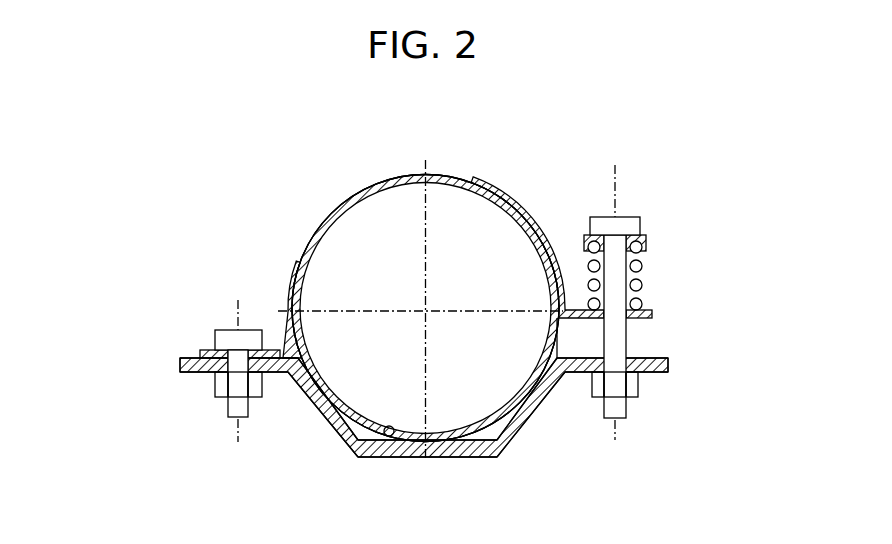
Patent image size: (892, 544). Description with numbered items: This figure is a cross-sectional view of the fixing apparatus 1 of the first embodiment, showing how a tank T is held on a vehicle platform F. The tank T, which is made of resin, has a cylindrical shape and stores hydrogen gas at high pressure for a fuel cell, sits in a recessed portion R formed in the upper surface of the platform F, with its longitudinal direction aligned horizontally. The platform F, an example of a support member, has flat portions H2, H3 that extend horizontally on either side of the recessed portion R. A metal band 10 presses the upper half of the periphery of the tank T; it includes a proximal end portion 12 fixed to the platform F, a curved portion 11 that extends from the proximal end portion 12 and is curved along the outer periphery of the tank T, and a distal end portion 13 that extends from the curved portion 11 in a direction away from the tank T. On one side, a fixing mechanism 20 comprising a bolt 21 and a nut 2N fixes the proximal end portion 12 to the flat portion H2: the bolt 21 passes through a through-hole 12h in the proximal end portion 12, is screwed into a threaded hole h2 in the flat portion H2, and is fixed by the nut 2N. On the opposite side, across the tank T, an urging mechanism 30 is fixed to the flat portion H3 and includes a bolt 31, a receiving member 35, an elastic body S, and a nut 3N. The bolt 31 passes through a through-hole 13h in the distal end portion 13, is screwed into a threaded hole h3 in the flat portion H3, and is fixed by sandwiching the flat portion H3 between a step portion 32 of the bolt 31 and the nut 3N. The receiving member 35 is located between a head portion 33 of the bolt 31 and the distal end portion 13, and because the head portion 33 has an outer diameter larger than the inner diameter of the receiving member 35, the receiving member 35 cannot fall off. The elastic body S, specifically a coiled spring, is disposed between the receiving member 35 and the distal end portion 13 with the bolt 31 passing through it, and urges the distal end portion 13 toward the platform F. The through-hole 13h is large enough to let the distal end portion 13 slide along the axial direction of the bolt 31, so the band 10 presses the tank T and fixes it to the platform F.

The fixing apparatus 1 is at (550, 136).
The band 10 is at (447, 177).
The curved portion 11 is at (387, 178).
The proximal end portion 12 is at (285, 343).
The through-hole 12h is at (224, 345).
The distal end portion 13 is at (652, 314).
The through-hole 13h is at (603, 314).
The fixing mechanism 20 is at (211, 337).
The bolt 21 is at (215, 340).
The nut 2N is at (213, 392).
The threaded hole h2 is at (250, 378).
The flat portion H2 is at (284, 376).
The urging mechanism 30 is at (627, 299).
The bolt 31 is at (627, 332).
The step portion 32 is at (640, 357).
The head portion 33 is at (627, 216).
The receiving member 35 is at (648, 242).
The elastic body S is at (642, 262).
The nut 3N is at (638, 388).
The threaded hole h3 is at (600, 400).
The flat portion H3 is at (567, 382).
The recessed portion R is at (390, 458).
The tank T is at (462, 408).
The platform F is at (502, 460).